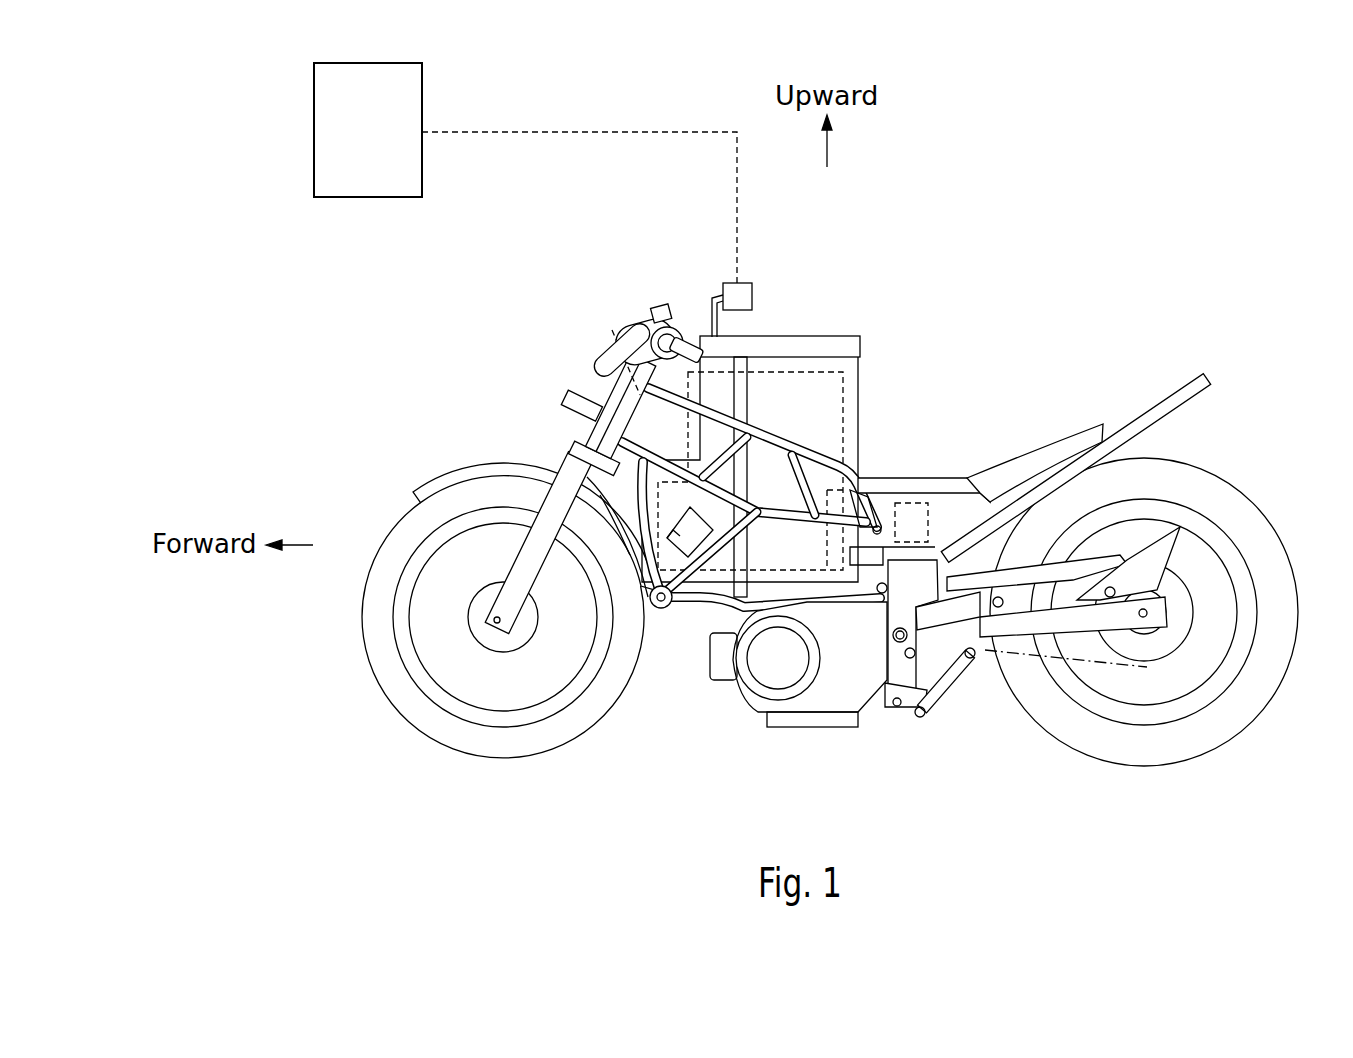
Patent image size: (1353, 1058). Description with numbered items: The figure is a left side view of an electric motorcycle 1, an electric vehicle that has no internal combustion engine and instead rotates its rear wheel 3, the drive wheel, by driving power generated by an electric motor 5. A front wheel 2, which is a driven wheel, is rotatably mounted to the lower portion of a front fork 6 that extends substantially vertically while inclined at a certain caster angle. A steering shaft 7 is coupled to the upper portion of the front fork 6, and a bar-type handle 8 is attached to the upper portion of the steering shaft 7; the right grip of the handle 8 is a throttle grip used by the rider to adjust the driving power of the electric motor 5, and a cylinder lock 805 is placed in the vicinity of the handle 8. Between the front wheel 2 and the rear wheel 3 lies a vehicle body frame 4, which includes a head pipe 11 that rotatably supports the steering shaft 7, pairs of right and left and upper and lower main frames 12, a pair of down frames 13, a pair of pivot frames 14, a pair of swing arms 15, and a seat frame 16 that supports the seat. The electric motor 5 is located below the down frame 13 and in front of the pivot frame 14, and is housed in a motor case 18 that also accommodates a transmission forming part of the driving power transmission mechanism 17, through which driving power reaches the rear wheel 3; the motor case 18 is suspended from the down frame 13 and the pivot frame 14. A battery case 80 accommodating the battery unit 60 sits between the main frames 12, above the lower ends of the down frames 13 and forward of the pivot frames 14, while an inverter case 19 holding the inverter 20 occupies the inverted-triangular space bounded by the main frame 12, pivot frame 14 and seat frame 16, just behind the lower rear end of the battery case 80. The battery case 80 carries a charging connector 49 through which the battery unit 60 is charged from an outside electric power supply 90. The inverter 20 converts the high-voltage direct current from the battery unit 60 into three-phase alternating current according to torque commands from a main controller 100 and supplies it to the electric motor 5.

The electric motorcycle 1 is at (1143, 275).
The front wheel 2 is at (423, 714).
The rear wheel 3 is at (1223, 720).
The vehicle body frame 4 is at (1147, 392).
The electric motor 5 is at (763, 677).
The front fork 6 is at (563, 487).
The steering shaft 7 is at (612, 330).
The bar-type handle 8 is at (658, 307).
The head pipe 11 is at (590, 395).
The main frames 12 is at (762, 427).
The down frames 13 is at (712, 600).
The pivot frames 14 is at (903, 667).
The swing arms 15 is at (1017, 632).
The seat frame 16 is at (1103, 427).
The driving power transmission mechanism 17 is at (848, 690).
The motor case 18 is at (833, 690).
The inverter case 19 is at (1030, 450).
The inverter 20 is at (930, 518).
The charging connector 49 is at (742, 283).
The battery unit 60 is at (860, 438).
The battery case 80 is at (858, 455).
The outside electric power supply 90 is at (422, 92).
The main controller 100 is at (667, 533).
The cylinder lock 805 is at (688, 335).